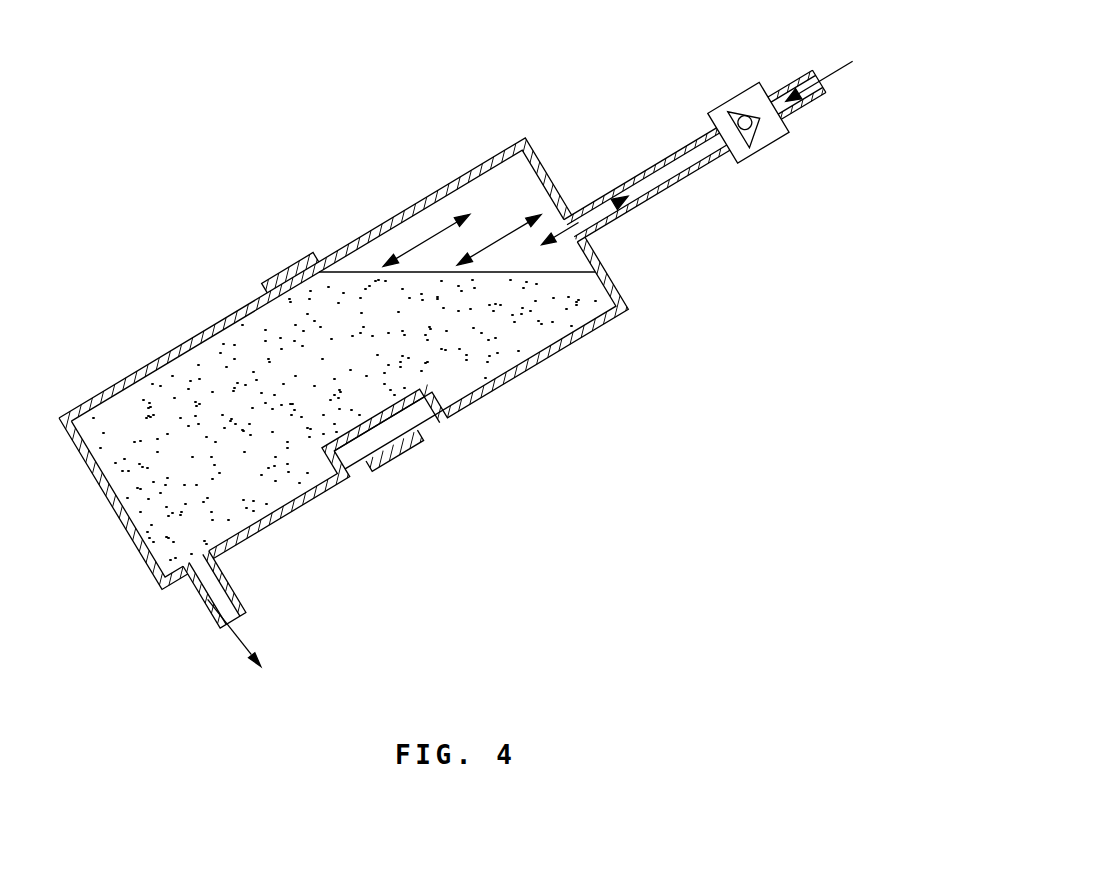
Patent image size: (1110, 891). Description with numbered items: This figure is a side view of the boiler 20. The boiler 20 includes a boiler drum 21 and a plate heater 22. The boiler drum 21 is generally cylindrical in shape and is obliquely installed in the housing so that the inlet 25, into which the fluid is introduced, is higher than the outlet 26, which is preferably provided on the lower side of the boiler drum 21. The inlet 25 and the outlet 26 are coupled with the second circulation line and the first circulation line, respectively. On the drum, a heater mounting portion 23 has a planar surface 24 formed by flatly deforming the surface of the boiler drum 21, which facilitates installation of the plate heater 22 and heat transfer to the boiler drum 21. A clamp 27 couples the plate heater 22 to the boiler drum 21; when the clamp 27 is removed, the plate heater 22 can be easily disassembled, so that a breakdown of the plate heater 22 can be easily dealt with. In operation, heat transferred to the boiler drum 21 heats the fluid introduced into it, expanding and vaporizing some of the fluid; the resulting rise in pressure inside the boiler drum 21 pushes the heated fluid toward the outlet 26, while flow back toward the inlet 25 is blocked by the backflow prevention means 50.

The boiler 20 is at (92, 157).
The boiler drum 21 is at (187, 343).
The plate heater 22 is at (370, 462).
The heater mounting portion 23 is at (449, 429).
The planar surface 24 is at (432, 416).
The inlet 25 is at (622, 185).
The outlet 26 is at (206, 598).
The clamp 27 is at (297, 268).
The backflow prevention means 50 is at (733, 110).